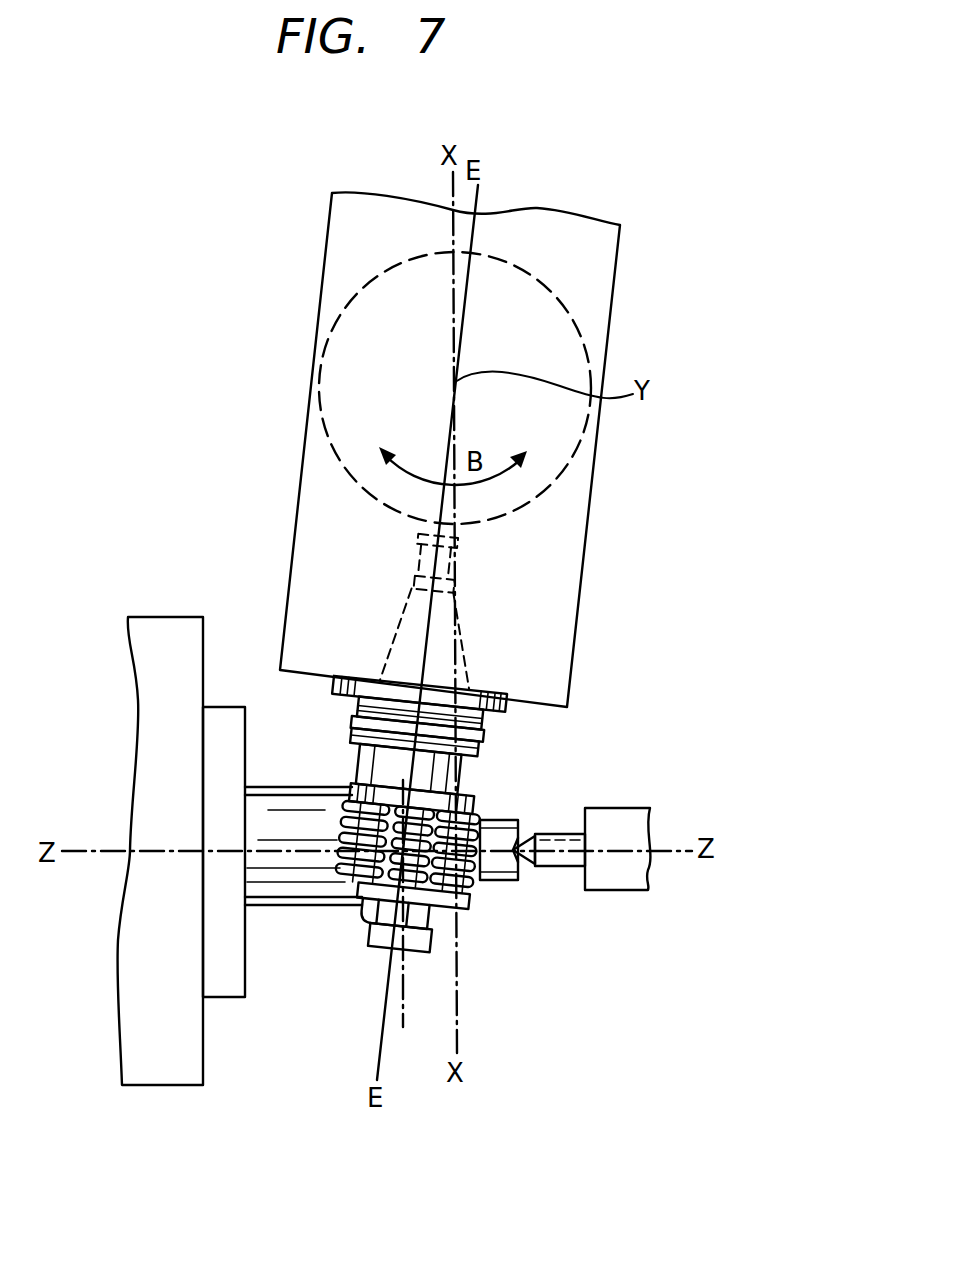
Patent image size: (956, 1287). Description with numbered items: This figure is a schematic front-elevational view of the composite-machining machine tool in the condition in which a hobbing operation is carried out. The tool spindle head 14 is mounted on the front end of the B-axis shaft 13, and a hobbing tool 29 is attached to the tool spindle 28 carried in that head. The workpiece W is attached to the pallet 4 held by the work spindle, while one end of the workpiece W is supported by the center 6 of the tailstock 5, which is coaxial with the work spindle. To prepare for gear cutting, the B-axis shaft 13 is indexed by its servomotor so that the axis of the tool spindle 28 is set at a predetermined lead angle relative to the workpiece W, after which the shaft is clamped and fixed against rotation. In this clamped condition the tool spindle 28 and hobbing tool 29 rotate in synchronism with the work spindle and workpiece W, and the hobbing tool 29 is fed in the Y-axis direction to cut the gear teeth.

The pallet 4 is at (180, 1077).
The tailstock 5 is at (608, 890).
The center 6 is at (542, 866).
The B-axis shaft 13 is at (557, 297).
The tool spindle head 14 is at (294, 493).
The tool spindle 28 is at (510, 703).
The hobbing tool 29 is at (473, 807).
The workpiece W is at (293, 903).